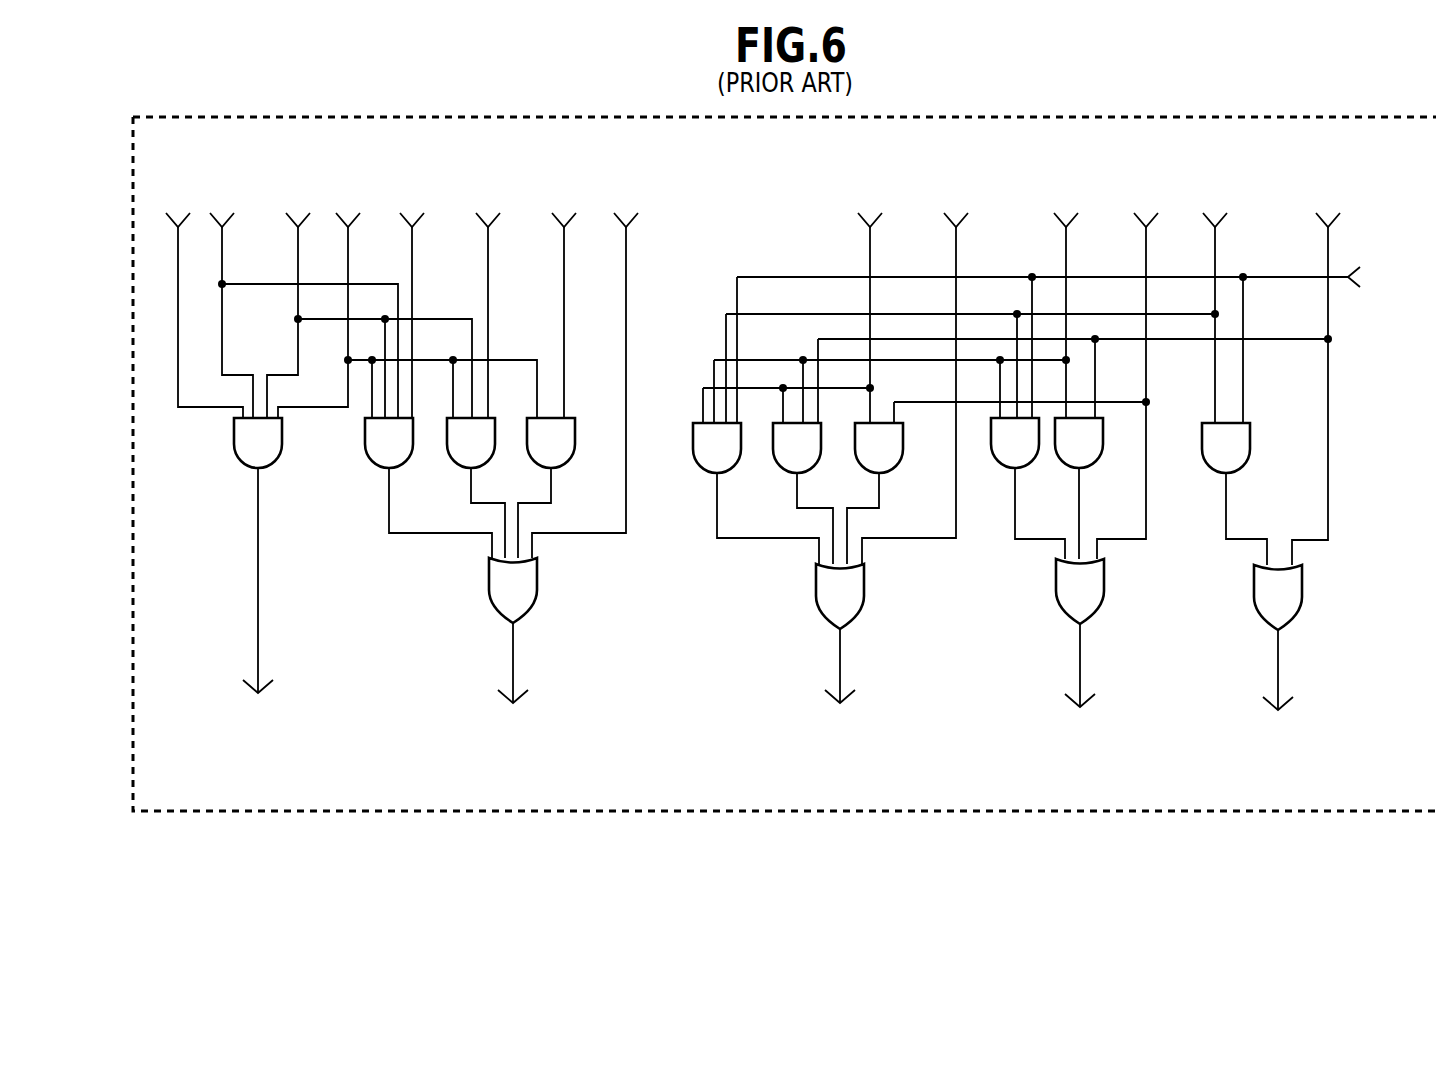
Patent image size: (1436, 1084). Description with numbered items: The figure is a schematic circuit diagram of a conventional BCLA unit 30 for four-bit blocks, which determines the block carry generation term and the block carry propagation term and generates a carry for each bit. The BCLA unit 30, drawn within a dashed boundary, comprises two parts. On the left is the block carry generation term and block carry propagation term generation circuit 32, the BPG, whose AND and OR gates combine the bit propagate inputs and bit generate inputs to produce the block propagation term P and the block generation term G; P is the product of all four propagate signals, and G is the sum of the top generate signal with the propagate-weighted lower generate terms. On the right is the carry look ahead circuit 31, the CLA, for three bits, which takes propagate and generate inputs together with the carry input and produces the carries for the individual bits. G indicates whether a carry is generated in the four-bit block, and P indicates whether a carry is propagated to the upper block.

The BCLA unit 30 is at (652, 813).
The carry look ahead circuit 31 is at (1123, 711).
The block carry generation term and block carry propagation term generation circuit 32 is at (373, 690).